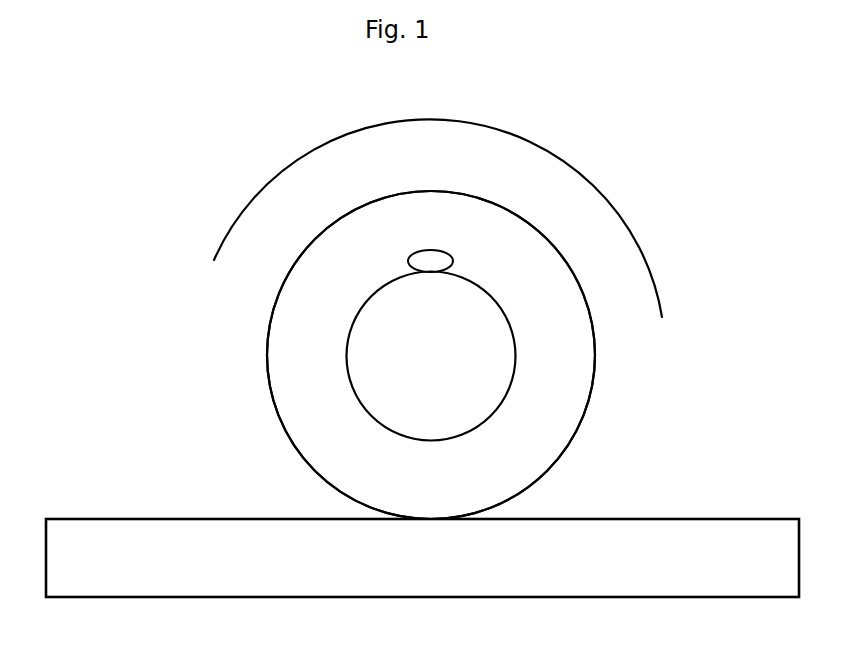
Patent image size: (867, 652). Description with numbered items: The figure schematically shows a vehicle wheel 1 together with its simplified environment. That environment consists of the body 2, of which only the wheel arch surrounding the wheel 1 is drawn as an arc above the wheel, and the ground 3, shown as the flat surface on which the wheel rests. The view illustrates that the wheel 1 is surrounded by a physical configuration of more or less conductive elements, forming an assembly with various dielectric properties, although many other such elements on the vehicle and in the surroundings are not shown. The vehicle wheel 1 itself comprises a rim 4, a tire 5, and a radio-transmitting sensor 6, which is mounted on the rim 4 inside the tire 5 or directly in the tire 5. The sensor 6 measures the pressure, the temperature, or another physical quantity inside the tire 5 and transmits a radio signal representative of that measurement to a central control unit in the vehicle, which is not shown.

The vehicle wheel 1 is at (622, 368).
The body 2 is at (588, 177).
The ground 3 is at (135, 518).
The rim 4 is at (345, 355).
The tire 5 is at (305, 405).
The radio-transmitting sensor 6 is at (429, 262).